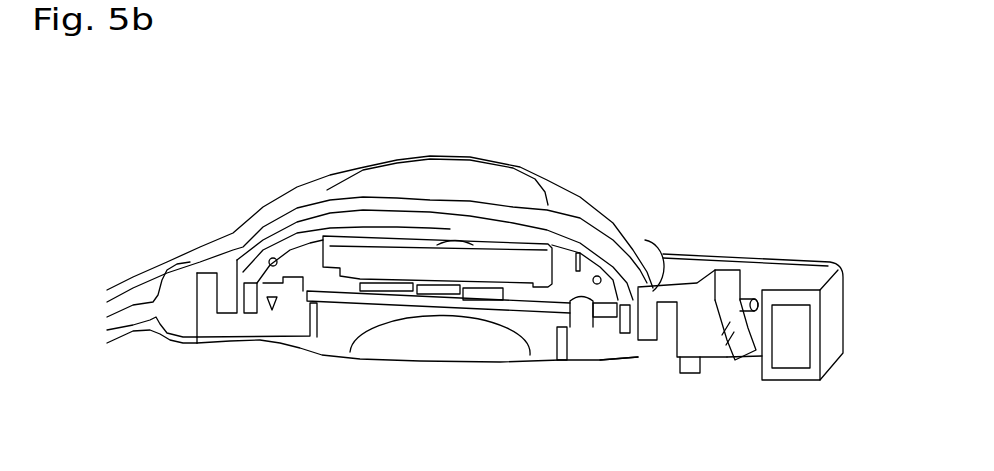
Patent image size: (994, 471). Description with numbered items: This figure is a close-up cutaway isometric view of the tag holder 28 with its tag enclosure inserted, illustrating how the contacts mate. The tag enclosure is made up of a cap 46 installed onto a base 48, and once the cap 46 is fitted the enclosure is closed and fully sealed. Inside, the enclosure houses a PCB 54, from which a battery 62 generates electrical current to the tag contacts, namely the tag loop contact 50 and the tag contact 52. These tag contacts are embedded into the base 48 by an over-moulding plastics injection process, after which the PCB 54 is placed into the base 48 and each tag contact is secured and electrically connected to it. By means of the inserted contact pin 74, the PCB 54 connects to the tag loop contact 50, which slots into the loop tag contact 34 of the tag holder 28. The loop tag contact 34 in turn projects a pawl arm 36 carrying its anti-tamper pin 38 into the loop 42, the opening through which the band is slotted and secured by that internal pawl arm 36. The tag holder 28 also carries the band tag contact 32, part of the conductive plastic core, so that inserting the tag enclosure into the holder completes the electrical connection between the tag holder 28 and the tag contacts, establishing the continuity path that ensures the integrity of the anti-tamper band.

The tag holder 28 is at (360, 170).
The band tag contact 32 is at (226, 276).
The loop tag contact 34 is at (648, 300).
The pawl arm 36 is at (731, 292).
The anti-tamper pin 38 is at (755, 292).
The loop 42 is at (747, 364).
The cap 46 is at (297, 212).
The base 48 is at (323, 357).
The tag loop contact 50 is at (664, 344).
The tag contact 52 is at (208, 314).
The PCB 54 is at (527, 318).
The battery 62 is at (393, 267).
The contact pin 74 is at (583, 321).